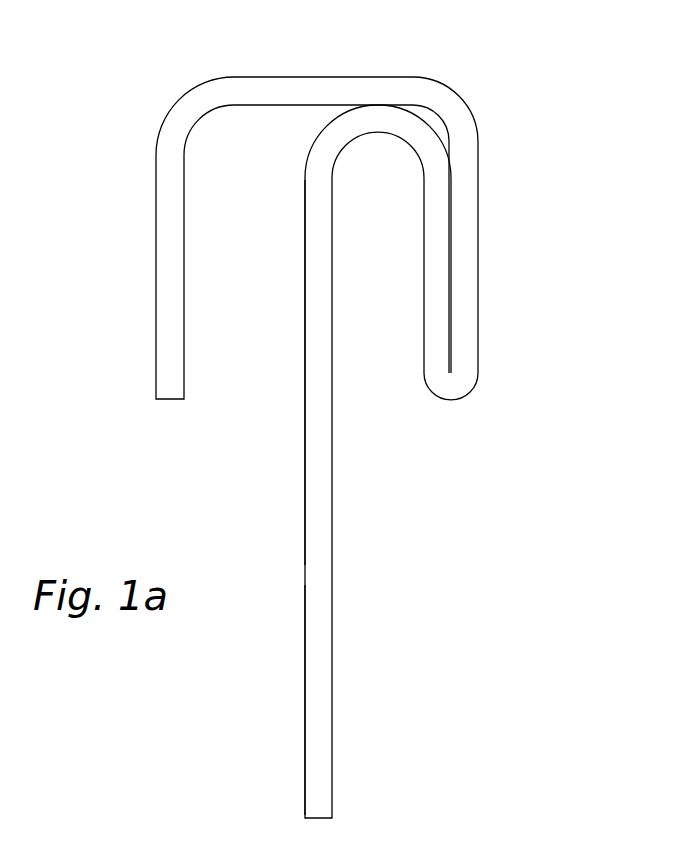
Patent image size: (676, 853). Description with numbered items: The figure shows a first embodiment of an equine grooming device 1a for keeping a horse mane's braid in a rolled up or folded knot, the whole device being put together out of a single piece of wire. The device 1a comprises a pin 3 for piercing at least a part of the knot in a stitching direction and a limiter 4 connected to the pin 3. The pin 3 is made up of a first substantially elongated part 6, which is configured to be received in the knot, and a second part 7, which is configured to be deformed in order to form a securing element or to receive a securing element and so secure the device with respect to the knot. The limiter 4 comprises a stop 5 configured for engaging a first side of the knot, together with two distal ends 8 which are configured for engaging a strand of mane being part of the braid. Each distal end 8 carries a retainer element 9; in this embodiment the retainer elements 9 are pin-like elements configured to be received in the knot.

The equine grooming device 1a is at (510, 191).
The pin 3 is at (338, 532).
The limiter 4 is at (288, 70).
The stop 5 is at (325, 114).
The first substantially elongated part 6 is at (295, 137).
The second part 7 is at (295, 580).
The distal ends 8 is at (166, 100).
The retainer element 9 is at (144, 305).